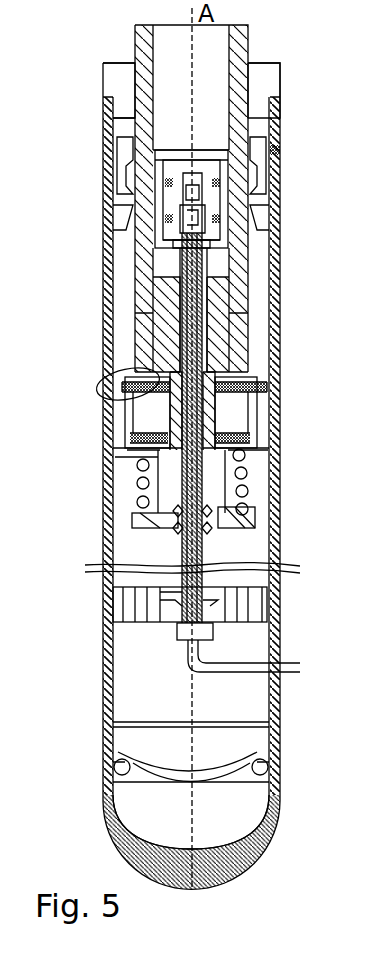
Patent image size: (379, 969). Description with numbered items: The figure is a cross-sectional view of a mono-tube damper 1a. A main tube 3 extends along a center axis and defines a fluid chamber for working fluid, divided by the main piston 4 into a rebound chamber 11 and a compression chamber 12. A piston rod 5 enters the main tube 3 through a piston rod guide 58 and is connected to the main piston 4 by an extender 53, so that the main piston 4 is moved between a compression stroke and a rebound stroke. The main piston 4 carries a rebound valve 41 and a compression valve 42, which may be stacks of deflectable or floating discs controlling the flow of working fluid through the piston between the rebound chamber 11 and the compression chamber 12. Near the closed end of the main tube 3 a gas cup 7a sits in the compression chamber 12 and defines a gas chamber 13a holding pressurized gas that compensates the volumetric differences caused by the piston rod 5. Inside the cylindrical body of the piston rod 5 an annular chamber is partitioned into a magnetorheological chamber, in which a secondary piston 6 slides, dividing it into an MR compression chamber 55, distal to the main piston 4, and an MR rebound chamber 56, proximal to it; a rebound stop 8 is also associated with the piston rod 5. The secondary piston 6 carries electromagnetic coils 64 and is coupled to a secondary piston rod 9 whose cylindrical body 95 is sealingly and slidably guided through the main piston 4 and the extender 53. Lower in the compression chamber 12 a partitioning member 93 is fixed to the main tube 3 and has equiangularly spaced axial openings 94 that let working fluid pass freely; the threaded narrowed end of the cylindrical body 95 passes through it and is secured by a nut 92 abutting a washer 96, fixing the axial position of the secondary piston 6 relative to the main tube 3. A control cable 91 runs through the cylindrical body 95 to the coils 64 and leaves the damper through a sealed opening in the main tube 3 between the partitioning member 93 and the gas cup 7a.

The mono-tube damper 1a is at (220, 476).
The main tube 3 is at (120, 166).
The main piston 4 is at (192, 416).
The piston rod 5 is at (268, 246).
The secondary piston 6 is at (250, 190).
The gas cup 7a is at (104, 742).
The rebound stop 8 is at (279, 150).
The secondary piston rod 9 is at (122, 428).
The rebound chamber 11 is at (130, 327).
The compression chamber 12 is at (140, 490).
The gas chamber 13a is at (145, 806).
The rebound valve 41 is at (105, 452).
The compression valve 42 is at (100, 381).
The extender 53 is at (230, 343).
The MR compression chamber 55 is at (170, 130).
The MR rebound chamber 56 is at (165, 265).
The piston rod guide 58 is at (120, 83).
The electromagnetic coils 64 is at (170, 225).
The control cable 91 is at (196, 668).
The nut 92 is at (185, 641).
The partitioning member 93 is at (155, 601).
The axial openings 94 is at (150, 600).
The cylindrical body 95 is at (140, 517).
The washer 96 is at (178, 630).